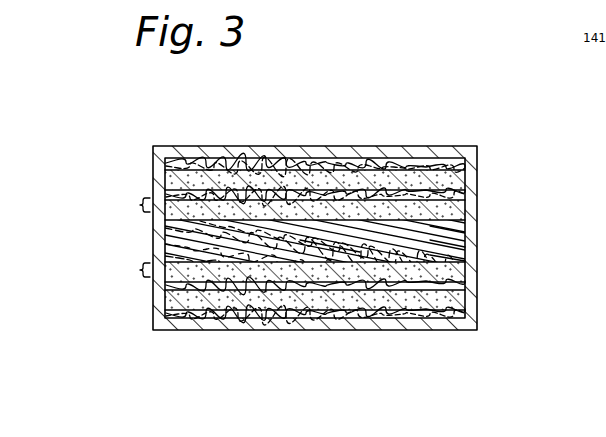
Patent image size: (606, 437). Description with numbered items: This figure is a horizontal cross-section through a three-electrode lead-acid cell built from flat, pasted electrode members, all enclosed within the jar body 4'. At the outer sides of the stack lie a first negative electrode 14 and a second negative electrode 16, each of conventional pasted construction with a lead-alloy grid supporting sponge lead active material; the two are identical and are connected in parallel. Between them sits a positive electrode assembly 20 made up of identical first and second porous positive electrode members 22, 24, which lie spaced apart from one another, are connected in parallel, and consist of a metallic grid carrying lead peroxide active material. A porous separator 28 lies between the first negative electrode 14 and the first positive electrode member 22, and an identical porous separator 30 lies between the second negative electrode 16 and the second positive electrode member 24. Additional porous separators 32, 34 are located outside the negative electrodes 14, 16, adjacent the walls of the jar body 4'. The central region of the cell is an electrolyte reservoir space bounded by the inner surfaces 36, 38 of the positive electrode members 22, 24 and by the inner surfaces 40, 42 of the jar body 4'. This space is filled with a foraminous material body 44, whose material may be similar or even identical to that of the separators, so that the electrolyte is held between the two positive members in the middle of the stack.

The first negative electrode 14 is at (156, 176).
The second negative electrode 16 is at (163, 302).
The positive electrode assembly 20 is at (134, 204).
The first positive electrode member 22 is at (460, 207).
The second positive electrode member 24 is at (478, 277).
The porous separator 28 is at (463, 192).
The second porous separator 30 is at (478, 301).
The additional porous separator 32 is at (375, 152).
The additional porous separator 34 is at (395, 318).
The inner surface of first positive electrode member 36 is at (478, 229).
The inner surface of second positive electrode member 38 is at (478, 258).
The inner surface of jar body 40 is at (158, 237).
The inner surface of jar body 42 is at (478, 243).
The foraminous material body 44 is at (328, 245).
The jar body 4' is at (463, 203).